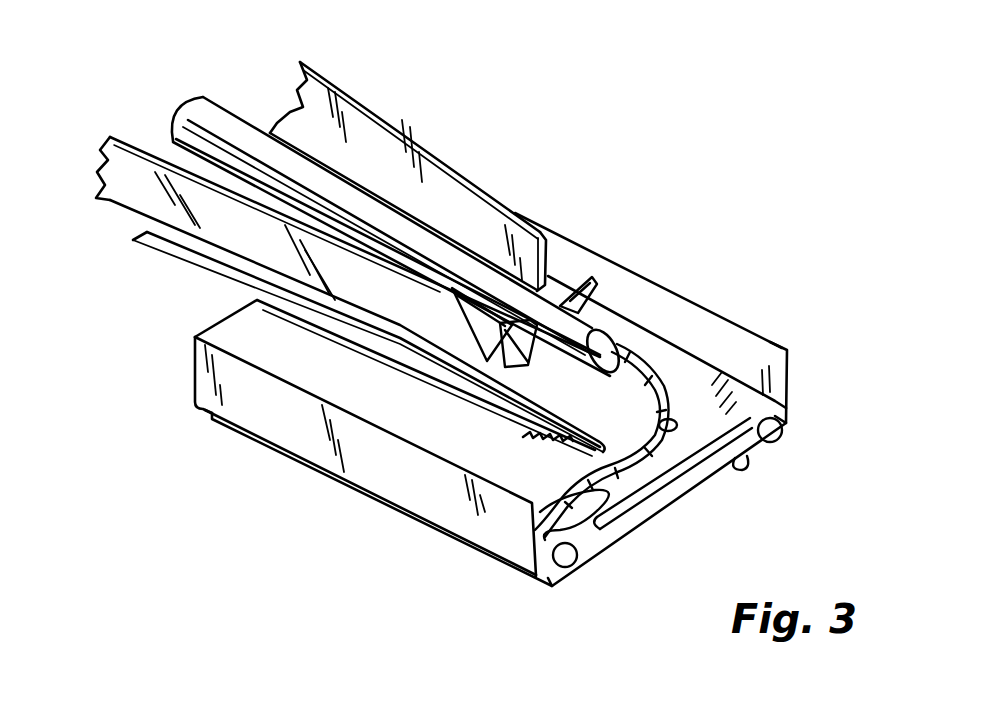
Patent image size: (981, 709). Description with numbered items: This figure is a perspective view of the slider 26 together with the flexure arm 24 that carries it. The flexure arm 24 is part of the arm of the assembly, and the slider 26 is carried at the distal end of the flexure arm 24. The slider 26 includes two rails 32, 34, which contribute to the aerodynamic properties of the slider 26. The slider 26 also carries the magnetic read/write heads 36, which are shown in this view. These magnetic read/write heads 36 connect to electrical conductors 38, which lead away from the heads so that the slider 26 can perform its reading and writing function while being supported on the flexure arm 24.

The flexure arm 24 is at (403, 110).
The slider 26 is at (658, 284).
The rail 32 is at (737, 462).
The rail 34 is at (297, 462).
The magnetic read/write heads 36 is at (783, 430).
The electrical conductors 38 is at (535, 532).